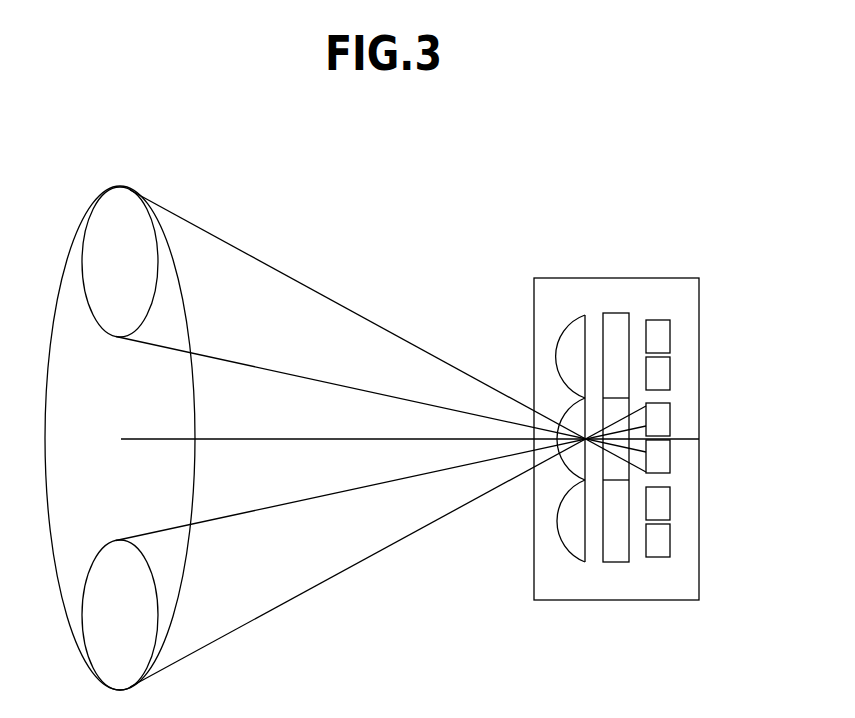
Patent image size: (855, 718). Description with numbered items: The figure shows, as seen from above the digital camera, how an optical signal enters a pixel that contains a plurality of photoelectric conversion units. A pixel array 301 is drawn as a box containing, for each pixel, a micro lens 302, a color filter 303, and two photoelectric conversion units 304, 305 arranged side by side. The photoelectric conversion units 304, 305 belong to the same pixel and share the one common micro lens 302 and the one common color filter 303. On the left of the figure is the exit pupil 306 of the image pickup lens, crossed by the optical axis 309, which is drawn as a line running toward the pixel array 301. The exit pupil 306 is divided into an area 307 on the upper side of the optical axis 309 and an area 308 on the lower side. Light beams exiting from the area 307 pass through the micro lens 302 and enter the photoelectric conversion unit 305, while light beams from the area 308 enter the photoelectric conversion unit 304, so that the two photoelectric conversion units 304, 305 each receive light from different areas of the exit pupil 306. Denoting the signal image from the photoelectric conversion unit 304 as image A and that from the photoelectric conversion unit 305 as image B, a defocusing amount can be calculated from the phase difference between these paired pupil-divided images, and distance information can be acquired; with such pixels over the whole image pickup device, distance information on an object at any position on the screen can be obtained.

The pixel array 301 is at (700, 330).
The micro lens 302 is at (572, 314).
The color filter 303 is at (618, 313).
The photoelectric conversion unit 304 is at (672, 417).
The photoelectric conversion unit 305 is at (672, 457).
The exit pupil 306 is at (195, 305).
The area 307 is at (120, 187).
The area 308 is at (155, 573).
The optical axis 309 is at (263, 439).